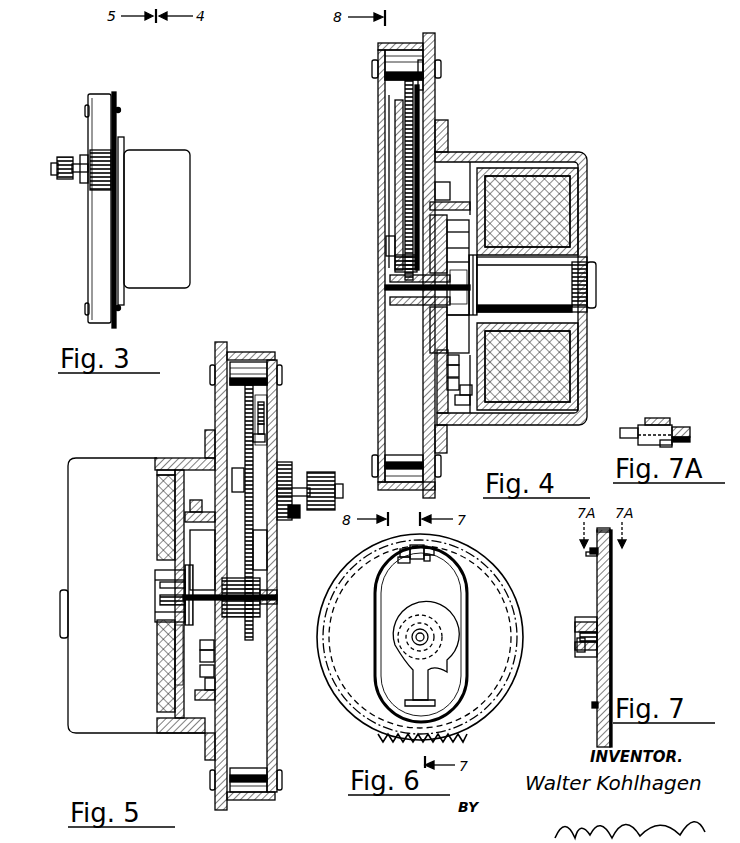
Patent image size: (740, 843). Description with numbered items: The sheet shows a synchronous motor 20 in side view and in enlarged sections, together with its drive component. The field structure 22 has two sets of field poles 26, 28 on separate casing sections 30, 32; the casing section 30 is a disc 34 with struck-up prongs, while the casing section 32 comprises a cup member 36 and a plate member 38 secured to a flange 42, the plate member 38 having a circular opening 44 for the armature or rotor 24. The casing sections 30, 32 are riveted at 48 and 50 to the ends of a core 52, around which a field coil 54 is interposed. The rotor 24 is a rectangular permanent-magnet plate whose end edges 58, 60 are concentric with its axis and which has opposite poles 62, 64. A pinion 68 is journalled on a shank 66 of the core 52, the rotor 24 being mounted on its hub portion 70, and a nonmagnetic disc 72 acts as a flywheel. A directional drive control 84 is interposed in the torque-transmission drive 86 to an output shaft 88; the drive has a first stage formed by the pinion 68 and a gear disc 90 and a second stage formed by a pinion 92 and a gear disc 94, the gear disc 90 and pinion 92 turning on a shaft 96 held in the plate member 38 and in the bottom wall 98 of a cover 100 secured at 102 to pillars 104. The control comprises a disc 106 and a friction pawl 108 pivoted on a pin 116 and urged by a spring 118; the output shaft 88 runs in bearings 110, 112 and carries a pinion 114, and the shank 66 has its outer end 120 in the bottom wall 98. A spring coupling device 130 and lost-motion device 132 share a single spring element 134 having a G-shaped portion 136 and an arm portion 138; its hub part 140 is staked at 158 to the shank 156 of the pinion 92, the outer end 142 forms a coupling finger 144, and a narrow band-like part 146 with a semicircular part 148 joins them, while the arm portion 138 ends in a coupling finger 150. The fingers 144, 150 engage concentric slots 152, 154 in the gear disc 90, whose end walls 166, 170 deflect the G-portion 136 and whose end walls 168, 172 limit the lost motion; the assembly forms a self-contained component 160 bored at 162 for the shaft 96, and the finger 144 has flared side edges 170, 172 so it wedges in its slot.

In FIG. 3, the synchronous motor 20 is at (134, 131).
In FIG. 4, the synchronous motor 20 is at (478, 91).
In FIG. 5, the synchronous motor 20 is at (179, 443).
In FIG. 4, the field structure 22 is at (443, 399).
In FIG. 5, the field structure 22 is at (215, 686).
In FIG. 4, the armature or rotor 24 is at (445, 358).
In FIG. 5, the armature or rotor 24 is at (214, 645).
In FIG. 4, the field poles 26 is at (453, 294).
In FIG. 5, the field poles 26 is at (196, 512).
In FIG. 4, the field poles 28 is at (417, 392).
In FIG. 5, the field poles 28 is at (212, 611).
In FIG. 4, the field casing section 30 is at (456, 420).
In FIG. 5, the field casing section 30 is at (190, 458).
In FIG. 4, the field casing section 32 is at (449, 445).
In FIG. 5, the field casing section 32 is at (210, 432).
In FIG. 4, the disc 34 is at (478, 262).
In FIG. 5, the disc 34 is at (186, 580).
In FIG. 3, the cup member 36 is at (175, 200).
In FIG. 4, the cup member 36 is at (542, 152).
In FIG. 5, the cup member 36 is at (160, 723).
In FIG. 3, the plate member 38 is at (114, 93).
In FIG. 4, the plate member 38 is at (436, 92).
In FIG. 5, the plate member 38 is at (215, 352).
In FIG. 3, the flange 42 is at (124, 215).
In FIG. 4, the flange 42 is at (440, 475).
In FIG. 5, the flange 42 is at (206, 755).
In FIG. 4, the circular opening 44 is at (447, 370).
In FIG. 5, the circular opening 44 is at (214, 657).
In FIG. 4, the riveting 48 is at (597, 283).
In FIG. 5, the riveting 48 is at (62, 605).
In FIG. 4, the riveting 50 is at (445, 316).
In FIG. 5, the riveting 50 is at (212, 575).
In FIG. 4, the post or core 52 is at (540, 299).
In FIG. 5, the post or core 52 is at (160, 604).
In FIG. 4, the field coil 54 is at (548, 223).
In FIG. 5, the field coil 54 is at (160, 685).
In FIG. 4, the end edge 58 is at (471, 162).
In FIG. 5, the end edge 58 is at (175, 528).
In FIG. 4, the end edge 60 is at (451, 383).
In FIG. 5, the end edge 60 is at (212, 695).
In FIG. 5, the rotor pole 62 is at (160, 540).
In FIG. 5, the rotor pole 64 is at (175, 650).
In FIG. 4, the shank 66 is at (390, 287).
In FIG. 5, the shank 66 is at (275, 597).
In FIG. 4, the pinion 68 is at (395, 262).
In FIG. 5, the pinion 68 is at (244, 617).
In FIG. 4, the hub portion 70 is at (470, 280).
In FIG. 5, the hub portion 70 is at (175, 600).
In FIG. 4, the disc 72 is at (465, 318).
In FIG. 5, the disc 72 is at (178, 548).
In FIG. 5, the directional drive control 84 is at (262, 438).
In FIG. 4, the torque-transmission drive 86 is at (394, 102).
In FIG. 5, the torque-transmission drive 86 is at (267, 559).
In FIG. 3, the output shaft 88 is at (79, 163).
In FIG. 5, the output shaft 88 is at (300, 486).
In FIG. 4, the gear disc 90 is at (386, 244).
In FIG. 6, the gear disc 90 is at (485, 568).
In FIG. 7A, the gear disc 90 is at (680, 427).
In FIG. 7, the gear disc 90 is at (597, 587).
In FIG. 4, the pinion 92 is at (395, 152).
In FIG. 6, the pinion 92 is at (440, 655).
In FIG. 7, the pinion 92 is at (580, 656).
In FIG. 4, the gear disc 94 is at (405, 124).
In FIG. 5, the gear disc 94 is at (253, 452).
In FIG. 4, the shaft 96 is at (451, 140).
In FIG. 4, the bottom wall 98 is at (378, 210).
In FIG. 5, the bottom wall 98 is at (277, 647).
In FIG. 4, the dished cover or casing 100 is at (385, 48).
In FIG. 5, the dished cover or casing 100 is at (262, 354).
In FIG. 3, the securing 102 is at (88, 110).
In FIG. 4, the securing 102 is at (372, 65).
In FIG. 5, the securing 102 is at (282, 377).
In FIG. 4, the pillars 104 is at (405, 62).
In FIG. 5, the pillars 104 is at (243, 370).
In FIG. 5, the disc 106 is at (283, 522).
In FIG. 5, the friction pawl 108 is at (268, 400).
In FIG. 5, the bearing 110 is at (240, 468).
In FIG. 3, the bearing 112 is at (84, 182).
In FIG. 5, the bearing 112 is at (300, 511).
In FIG. 3, the pinion 114 is at (62, 178).
In FIG. 5, the pinion 114 is at (326, 474).
In FIG. 5, the pin 116 is at (265, 426).
In FIG. 5, the spring 118 is at (266, 412).
In FIG. 4, the outer end 120 is at (392, 278).
In FIG. 5, the outer end 120 is at (280, 594).
In FIG. 4, the spring coupling device 130 is at (428, 78).
In FIG. 6, the spring coupling device 130 is at (433, 550).
In FIG. 7, the spring coupling device 130 is at (594, 561).
In FIG. 6, the lost-motion device 132 is at (438, 692).
In FIG. 7, the lost-motion device 132 is at (592, 701).
In FIG. 4, the spring element 134 is at (448, 112).
In FIG. 6, the spring element 134 is at (372, 607).
In FIG. 7A, the spring element 134 is at (666, 418).
In FIG. 7, the spring element 134 is at (612, 604).
In FIG. 6, the G-shaped portion 136 is at (388, 693).
In FIG. 7, the G-shaped portion 136 is at (614, 580).
In FIG. 6, the arm portion 138 is at (412, 688).
In FIG. 7, the arm portion 138 is at (612, 674).
In FIG. 6, the hub part 140 is at (422, 628).
In FIG. 7, the hub part 140 is at (612, 618).
In FIG. 6, the outer end 142 is at (400, 551).
In FIG. 7A, the outer end 142 is at (650, 418).
In FIG. 7, the outer end 142 is at (610, 545).
In FIG. 7A, the coupling part or finger 144 is at (675, 445).
In FIG. 7, the coupling part or finger 144 is at (590, 556).
In FIG. 6, the band-like part 146 is at (382, 655).
In FIG. 6, the semicircular part 148 is at (415, 728).
In FIG. 7, the coupling part or finger 150 is at (592, 705).
In FIG. 6, the slot 152 is at (408, 560).
In FIG. 7A, the slot 152 is at (636, 426).
In FIG. 7, the slot 152 is at (590, 551).
In FIG. 6, the slot 154 is at (440, 703).
In FIG. 7, the slot 154 is at (593, 708).
In FIG. 6, the axial shank or hub 156 is at (415, 630).
In FIG. 7, the axial shank or hub 156 is at (612, 650).
In FIG. 6, the staking 158 is at (430, 626).
In FIG. 7, the staking 158 is at (612, 640).
In FIG. 6, the self-contained component 160 is at (527, 630).
In FIG. 7, the self-contained component 160 is at (618, 593).
In FIG. 6, the axial bore 162 is at (441, 675).
In FIG. 7, the axial bore 162 is at (580, 644).
In FIG. 6, the end wall 166 is at (404, 563).
In FIG. 7A, the end wall 166 is at (683, 427).
In FIG. 6, the end wall 168 is at (440, 695).
In FIG. 6, the end wall / side edge 170 is at (430, 558).
In FIG. 7A, the end wall / side edge 170 is at (620, 437).
In FIG. 6, the end wall / side edge 172 is at (405, 718).
In FIG. 7A, the end wall / side edge 172 is at (690, 435).